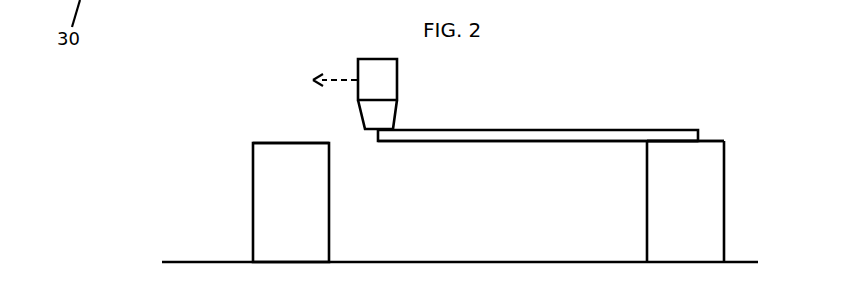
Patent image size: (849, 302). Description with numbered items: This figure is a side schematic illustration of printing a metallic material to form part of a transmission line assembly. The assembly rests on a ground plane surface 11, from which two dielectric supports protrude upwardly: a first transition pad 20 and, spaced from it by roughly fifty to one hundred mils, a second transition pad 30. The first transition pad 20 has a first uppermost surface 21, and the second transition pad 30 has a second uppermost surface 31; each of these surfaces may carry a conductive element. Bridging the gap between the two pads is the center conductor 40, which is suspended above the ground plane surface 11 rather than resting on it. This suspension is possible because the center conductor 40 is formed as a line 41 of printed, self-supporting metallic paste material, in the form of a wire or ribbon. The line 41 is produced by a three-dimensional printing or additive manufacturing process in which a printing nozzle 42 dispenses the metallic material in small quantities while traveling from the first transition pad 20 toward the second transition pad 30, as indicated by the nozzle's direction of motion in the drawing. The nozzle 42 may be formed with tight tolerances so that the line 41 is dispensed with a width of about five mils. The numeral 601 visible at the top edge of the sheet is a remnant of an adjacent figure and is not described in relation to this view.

The ground plane surface 11 is at (177, 262).
The first transition pad 20 is at (703, 192).
The first uppermost surface 21 is at (709, 141).
The second transition pad 30 is at (272, 192).
The second uppermost surface 31 is at (278, 143).
The center conductor 40 is at (612, 130).
The line 41 is at (562, 138).
The printing nozzle 42 is at (397, 95).
The element of preceding figure 601 is at (173, 15).